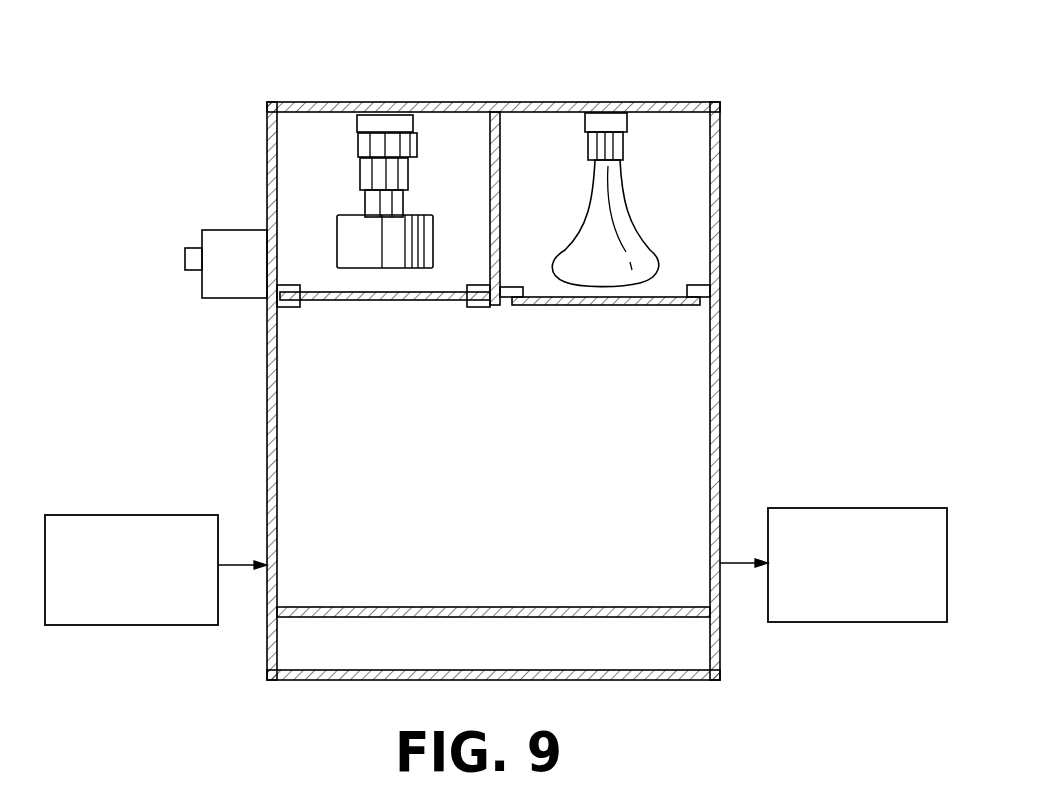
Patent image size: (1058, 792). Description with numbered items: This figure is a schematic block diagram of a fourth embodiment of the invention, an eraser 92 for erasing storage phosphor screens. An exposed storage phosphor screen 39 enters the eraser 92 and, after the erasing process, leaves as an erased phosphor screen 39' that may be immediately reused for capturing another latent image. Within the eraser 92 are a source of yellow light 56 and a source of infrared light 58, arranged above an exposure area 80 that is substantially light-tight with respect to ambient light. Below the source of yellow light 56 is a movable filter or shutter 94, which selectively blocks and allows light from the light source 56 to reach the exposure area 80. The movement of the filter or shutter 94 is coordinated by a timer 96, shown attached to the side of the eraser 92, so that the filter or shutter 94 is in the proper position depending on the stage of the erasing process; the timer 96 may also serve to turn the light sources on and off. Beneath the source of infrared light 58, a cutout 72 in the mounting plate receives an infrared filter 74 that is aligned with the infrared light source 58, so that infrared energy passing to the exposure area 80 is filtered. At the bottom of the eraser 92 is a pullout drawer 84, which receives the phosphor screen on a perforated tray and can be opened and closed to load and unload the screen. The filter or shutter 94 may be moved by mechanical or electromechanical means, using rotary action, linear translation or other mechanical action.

The eraser 92 is at (250, 90).
The timer 96 is at (235, 238).
The source of yellow light 56 is at (352, 223).
The source of infrared light 58 is at (628, 240).
The cutout 72 is at (510, 292).
The infrared filter 74 is at (605, 305).
The movable filter or shutter 94 is at (378, 302).
The exposure area 80 is at (507, 500).
The pullout drawer 84 is at (508, 655).
The exposed storage phosphor screen 39 is at (156, 543).
The erased phosphor screen 39' is at (833, 539).